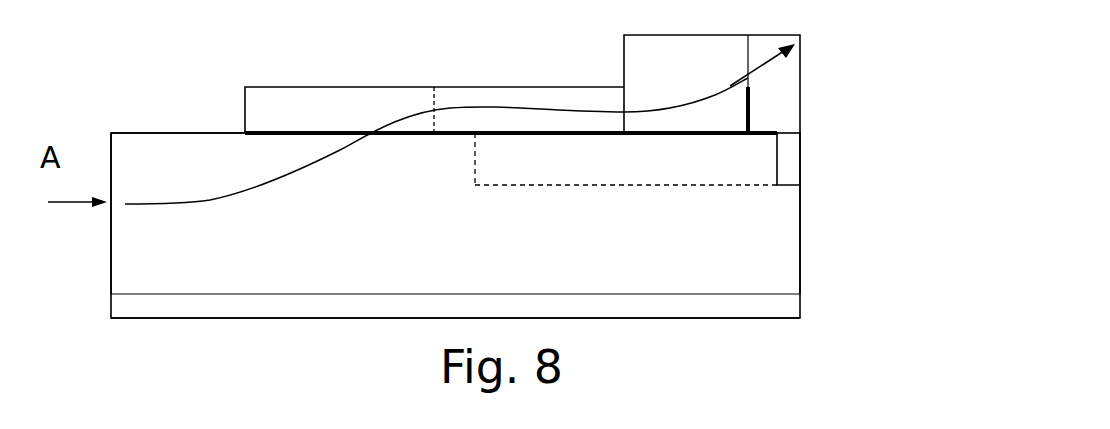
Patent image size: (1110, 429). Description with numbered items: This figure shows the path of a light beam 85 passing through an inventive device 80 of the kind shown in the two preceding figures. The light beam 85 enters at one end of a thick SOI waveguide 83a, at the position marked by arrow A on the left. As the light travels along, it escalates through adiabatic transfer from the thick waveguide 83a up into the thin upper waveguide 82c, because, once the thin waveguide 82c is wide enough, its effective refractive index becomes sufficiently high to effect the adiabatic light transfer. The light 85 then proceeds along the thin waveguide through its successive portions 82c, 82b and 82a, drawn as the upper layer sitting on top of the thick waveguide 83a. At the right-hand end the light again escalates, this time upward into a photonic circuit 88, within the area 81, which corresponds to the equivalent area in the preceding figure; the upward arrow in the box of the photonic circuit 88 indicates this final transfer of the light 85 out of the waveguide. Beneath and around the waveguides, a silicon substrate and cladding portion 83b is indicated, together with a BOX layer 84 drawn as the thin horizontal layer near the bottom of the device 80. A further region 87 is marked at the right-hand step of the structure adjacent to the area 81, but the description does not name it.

The inventive device 80 is at (135, 110).
The area 81 is at (748, 78).
The thin waveguide portion 82a is at (642, 87).
The thin waveguide portion 82b is at (497, 87).
The thin waveguide 82c is at (358, 87).
The thick SOI waveguide 83a is at (213, 158).
The silicon substrate and cladding portion 83b is at (778, 233).
The BOX layer 84 is at (785, 310).
The light beam 85 is at (250, 193).
The contact region 87 is at (780, 118).
The photonic circuit 88 is at (748, 34).